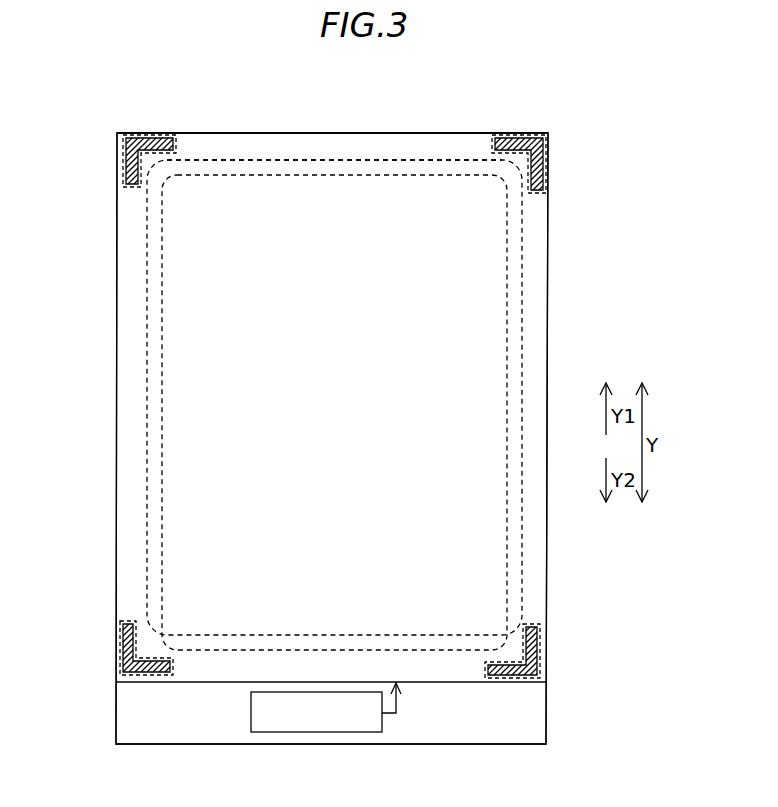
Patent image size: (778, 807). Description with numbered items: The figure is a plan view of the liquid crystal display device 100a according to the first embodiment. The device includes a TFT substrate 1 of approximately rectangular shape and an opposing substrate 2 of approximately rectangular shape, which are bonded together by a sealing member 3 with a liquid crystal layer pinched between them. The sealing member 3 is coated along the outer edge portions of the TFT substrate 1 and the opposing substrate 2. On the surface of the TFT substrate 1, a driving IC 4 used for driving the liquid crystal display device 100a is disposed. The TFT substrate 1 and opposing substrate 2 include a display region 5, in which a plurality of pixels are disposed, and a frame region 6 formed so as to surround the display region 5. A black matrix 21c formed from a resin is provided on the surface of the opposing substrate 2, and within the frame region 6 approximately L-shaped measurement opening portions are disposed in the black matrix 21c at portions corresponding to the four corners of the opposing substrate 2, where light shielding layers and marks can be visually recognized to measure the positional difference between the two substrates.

The TFT substrate 1 is at (547, 718).
The opposing substrate 2 is at (546, 678).
The sealing member 3 is at (314, 160).
The driving IC 4 is at (318, 734).
The display region 5 is at (277, 192).
The frame region 6 is at (243, 145).
The black matrix 21c is at (201, 148).
The liquid crystal display device 100a is at (573, 176).